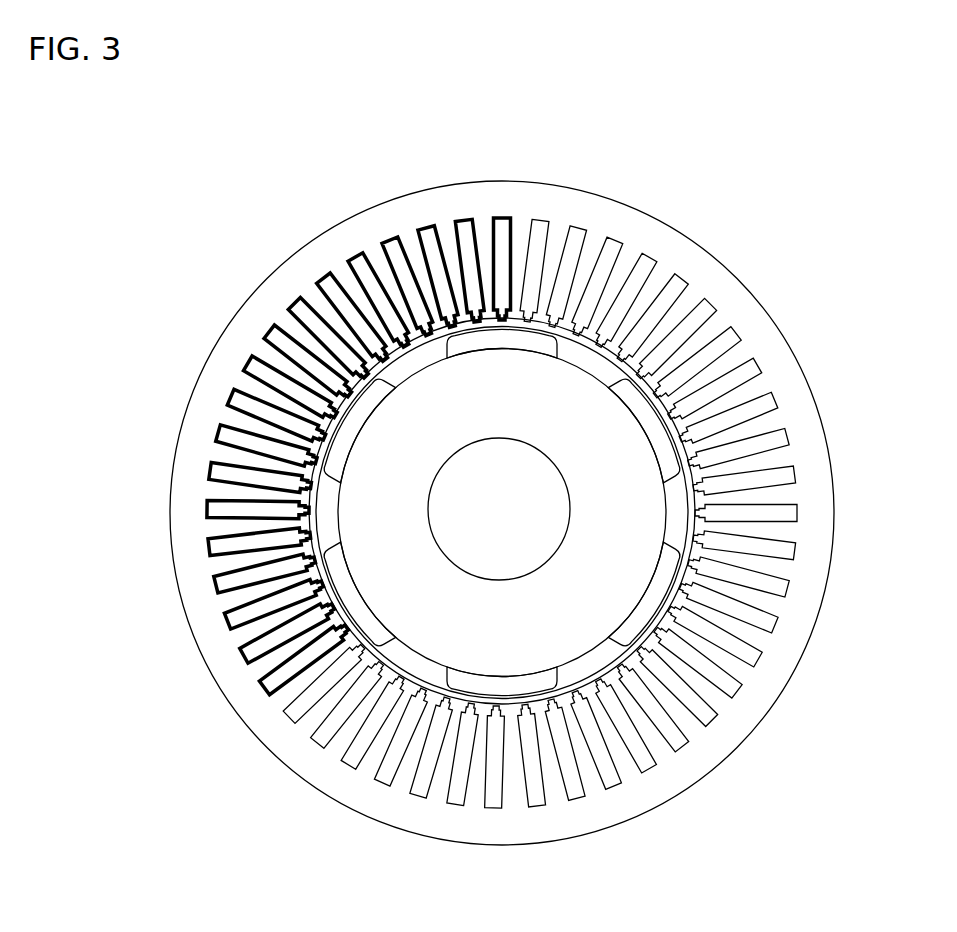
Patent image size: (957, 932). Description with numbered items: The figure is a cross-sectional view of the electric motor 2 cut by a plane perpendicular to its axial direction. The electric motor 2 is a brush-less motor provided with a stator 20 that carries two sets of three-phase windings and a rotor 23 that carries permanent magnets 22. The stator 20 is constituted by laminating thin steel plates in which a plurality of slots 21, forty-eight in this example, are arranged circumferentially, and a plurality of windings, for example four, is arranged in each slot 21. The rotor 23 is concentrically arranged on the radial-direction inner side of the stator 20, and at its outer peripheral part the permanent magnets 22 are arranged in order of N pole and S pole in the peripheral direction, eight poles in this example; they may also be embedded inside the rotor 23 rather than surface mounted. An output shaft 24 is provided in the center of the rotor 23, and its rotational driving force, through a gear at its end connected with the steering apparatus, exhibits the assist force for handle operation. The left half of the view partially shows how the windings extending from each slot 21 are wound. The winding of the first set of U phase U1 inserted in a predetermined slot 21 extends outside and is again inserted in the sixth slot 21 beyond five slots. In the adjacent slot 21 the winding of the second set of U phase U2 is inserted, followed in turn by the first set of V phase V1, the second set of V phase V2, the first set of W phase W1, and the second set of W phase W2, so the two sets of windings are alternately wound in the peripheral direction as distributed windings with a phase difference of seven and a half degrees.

The electric motor 2 is at (642, 128).
The stator 20 is at (712, 253).
The slot 21 is at (743, 332).
The permanent magnet 22 is at (653, 423).
The rotor 23 is at (605, 580).
The output shaft 24 is at (545, 565).
The winding of first set of U phase U1 is at (501, 216).
The winding of second set of U phase U2 is at (465, 220).
The winding of first set of V phase V1 is at (427, 228).
The winding of second set of V phase V2 is at (390, 240).
The winding of first set of W phase W1 is at (355, 257).
The winding of second set of W phase W2 is at (322, 279).